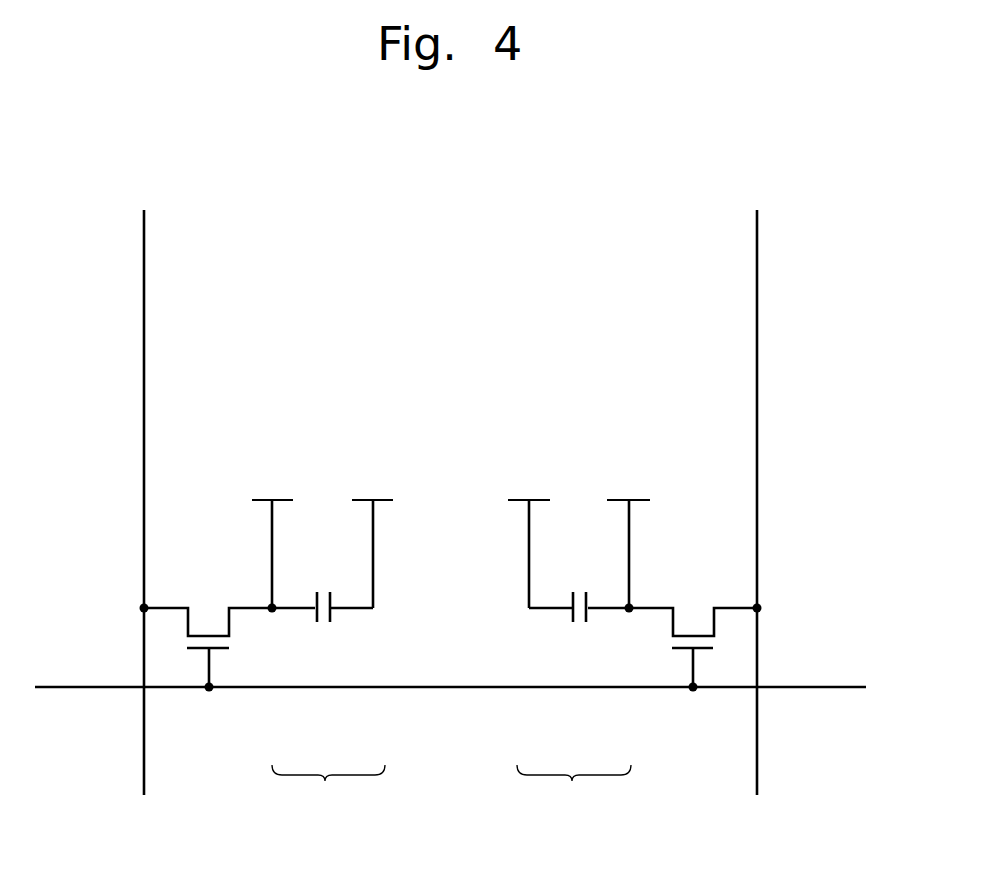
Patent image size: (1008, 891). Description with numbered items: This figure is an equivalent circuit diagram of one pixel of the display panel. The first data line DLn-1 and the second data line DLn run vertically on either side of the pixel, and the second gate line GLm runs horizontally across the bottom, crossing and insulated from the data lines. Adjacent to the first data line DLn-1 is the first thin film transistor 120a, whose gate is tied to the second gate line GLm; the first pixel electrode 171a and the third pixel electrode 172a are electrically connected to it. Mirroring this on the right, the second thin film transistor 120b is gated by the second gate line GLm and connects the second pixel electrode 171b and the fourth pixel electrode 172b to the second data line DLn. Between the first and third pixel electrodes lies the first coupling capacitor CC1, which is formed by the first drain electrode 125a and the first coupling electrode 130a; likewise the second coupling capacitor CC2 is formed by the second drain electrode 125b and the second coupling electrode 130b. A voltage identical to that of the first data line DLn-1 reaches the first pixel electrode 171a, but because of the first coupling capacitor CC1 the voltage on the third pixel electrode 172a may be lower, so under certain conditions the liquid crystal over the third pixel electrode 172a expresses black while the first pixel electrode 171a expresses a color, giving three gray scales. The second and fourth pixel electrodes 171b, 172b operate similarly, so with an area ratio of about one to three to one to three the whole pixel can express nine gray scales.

The first data line DLn-1 is at (146, 270).
The second data line DLn is at (759, 270).
The second gate line GLm is at (88, 690).
The first thin film transistor 120a is at (229, 643).
The second thin film transistor 120b is at (672, 643).
The first drain electrode 125a is at (313, 620).
The second drain electrode 125b is at (588, 620).
The first coupling electrode 130a is at (335, 620).
The second coupling electrode 130b is at (568, 620).
The first pixel electrode 171a is at (260, 498).
The second pixel electrode 171b is at (615, 498).
The third pixel electrode 172a is at (358, 498).
The fourth pixel electrode 172b is at (515, 498).
The first coupling capacitor CC1 is at (328, 787).
The second coupling capacitor CC2 is at (574, 787).